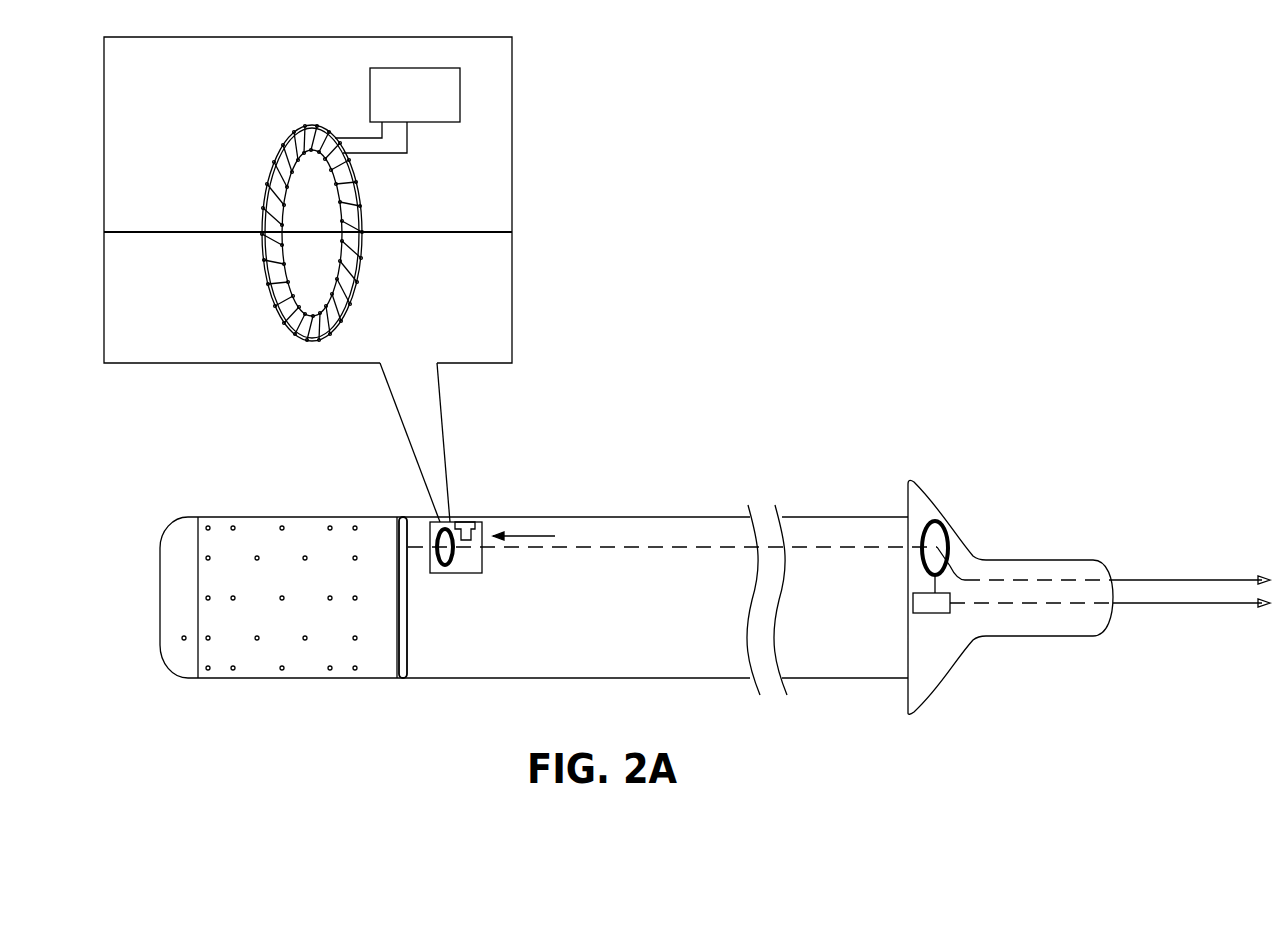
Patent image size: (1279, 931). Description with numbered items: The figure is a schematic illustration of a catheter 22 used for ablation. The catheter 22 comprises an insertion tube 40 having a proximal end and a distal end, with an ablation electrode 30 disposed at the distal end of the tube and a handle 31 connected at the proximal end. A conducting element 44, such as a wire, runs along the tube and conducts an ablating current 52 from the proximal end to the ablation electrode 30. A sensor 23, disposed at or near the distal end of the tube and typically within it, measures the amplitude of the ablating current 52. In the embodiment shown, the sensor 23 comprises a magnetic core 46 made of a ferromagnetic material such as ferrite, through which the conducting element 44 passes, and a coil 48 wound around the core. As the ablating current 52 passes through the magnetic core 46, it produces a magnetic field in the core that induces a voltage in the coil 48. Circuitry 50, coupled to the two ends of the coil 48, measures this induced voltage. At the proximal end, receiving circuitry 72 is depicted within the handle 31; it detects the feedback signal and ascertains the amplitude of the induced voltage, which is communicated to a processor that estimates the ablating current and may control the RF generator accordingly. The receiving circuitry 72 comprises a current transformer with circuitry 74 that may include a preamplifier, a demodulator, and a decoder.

The catheter 22 is at (674, 563).
The sensor 23 is at (307, 215).
The ablation electrode 30 is at (267, 517).
The handle 31 is at (925, 487).
The insertion tube 40 is at (698, 517).
The conducting element 44 is at (222, 233).
The magnetic core 46 is at (284, 297).
The coil 48 is at (364, 276).
The circuitry 50 is at (370, 92).
The ablating current 52 is at (525, 535).
The receiving circuitry 72 is at (962, 647).
The circuitry 74 is at (928, 615).